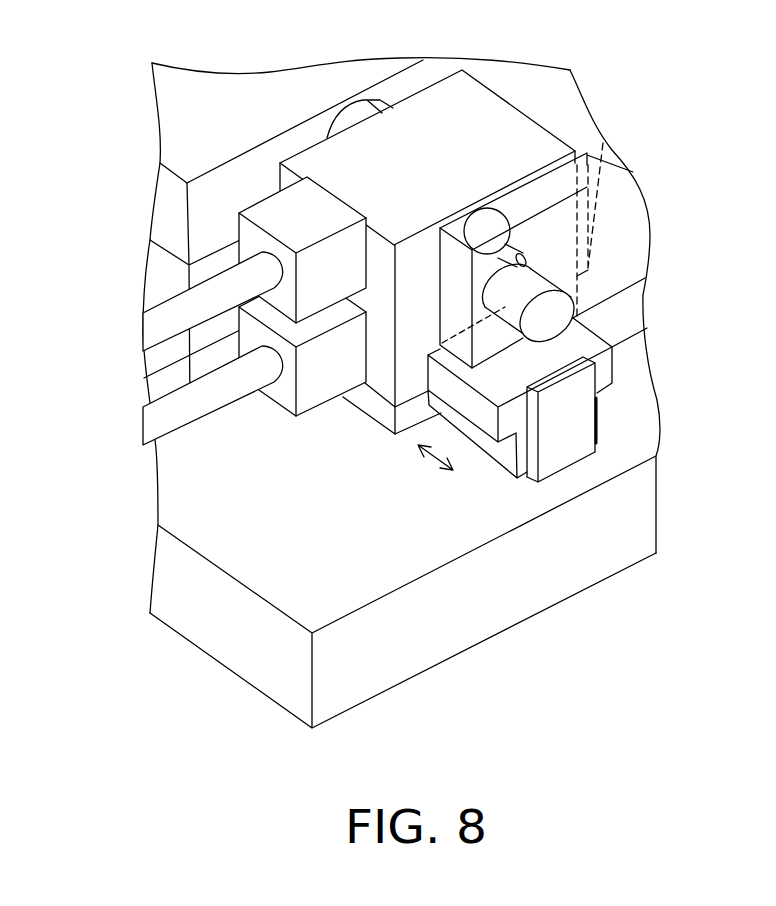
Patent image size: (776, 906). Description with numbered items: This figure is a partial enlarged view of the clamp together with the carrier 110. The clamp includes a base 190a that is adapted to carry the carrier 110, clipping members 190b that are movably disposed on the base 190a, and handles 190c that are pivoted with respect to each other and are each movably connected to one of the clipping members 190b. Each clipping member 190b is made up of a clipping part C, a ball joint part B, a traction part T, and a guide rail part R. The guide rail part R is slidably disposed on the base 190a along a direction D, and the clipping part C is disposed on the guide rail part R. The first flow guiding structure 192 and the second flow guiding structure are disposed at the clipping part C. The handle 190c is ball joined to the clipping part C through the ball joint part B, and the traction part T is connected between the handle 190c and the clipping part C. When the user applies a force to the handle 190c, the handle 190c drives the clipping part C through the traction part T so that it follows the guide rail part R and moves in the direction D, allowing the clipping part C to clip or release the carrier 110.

The carrier 110 is at (183, 128).
The first flow guiding structure 192 is at (180, 305).
The base 190a is at (640, 518).
The clipping member 190b is at (379, 455).
The handle 190c is at (625, 253).
The ball joint part B is at (486, 207).
The clipping part C is at (383, 385).
The direction D is at (438, 463).
The guide rail part R is at (480, 408).
The traction part T is at (550, 320).